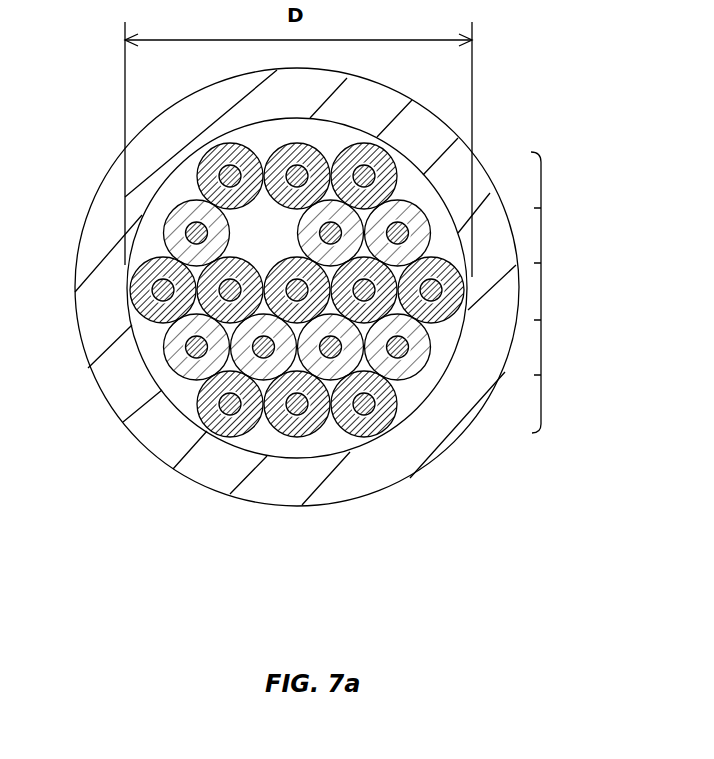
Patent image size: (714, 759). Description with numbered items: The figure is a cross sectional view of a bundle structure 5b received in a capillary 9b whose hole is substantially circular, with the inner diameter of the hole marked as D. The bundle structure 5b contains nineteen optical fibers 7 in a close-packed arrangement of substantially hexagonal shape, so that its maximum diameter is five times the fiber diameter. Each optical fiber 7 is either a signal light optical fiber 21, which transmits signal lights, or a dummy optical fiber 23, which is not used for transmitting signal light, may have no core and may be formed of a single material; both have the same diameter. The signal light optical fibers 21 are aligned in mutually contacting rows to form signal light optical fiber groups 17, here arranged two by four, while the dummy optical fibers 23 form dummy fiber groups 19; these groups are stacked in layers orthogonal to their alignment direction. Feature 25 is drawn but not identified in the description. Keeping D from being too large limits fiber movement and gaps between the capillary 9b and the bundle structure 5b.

The bundle structure 5b is at (503, 94).
The capillary 9b is at (430, 457).
The optical fiber 7 is at (337, 349).
The signal light optical fiber group 17 is at (337, 356).
The dummy fiber group 19 is at (375, 331).
The signal light optical fiber 21 is at (258, 428).
The dummy optical fiber 23 is at (262, 358).
The core wire 25 is at (200, 227).